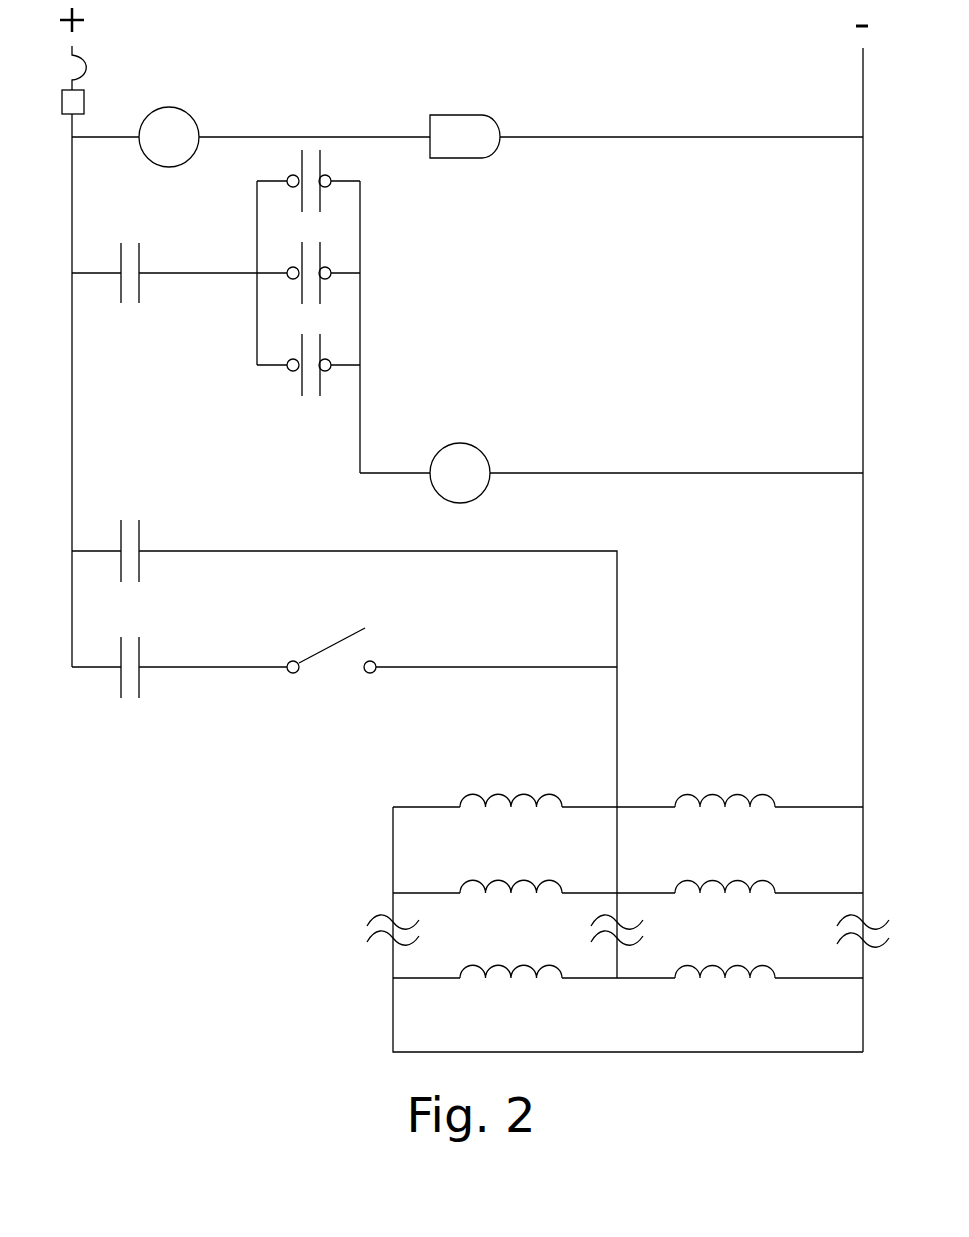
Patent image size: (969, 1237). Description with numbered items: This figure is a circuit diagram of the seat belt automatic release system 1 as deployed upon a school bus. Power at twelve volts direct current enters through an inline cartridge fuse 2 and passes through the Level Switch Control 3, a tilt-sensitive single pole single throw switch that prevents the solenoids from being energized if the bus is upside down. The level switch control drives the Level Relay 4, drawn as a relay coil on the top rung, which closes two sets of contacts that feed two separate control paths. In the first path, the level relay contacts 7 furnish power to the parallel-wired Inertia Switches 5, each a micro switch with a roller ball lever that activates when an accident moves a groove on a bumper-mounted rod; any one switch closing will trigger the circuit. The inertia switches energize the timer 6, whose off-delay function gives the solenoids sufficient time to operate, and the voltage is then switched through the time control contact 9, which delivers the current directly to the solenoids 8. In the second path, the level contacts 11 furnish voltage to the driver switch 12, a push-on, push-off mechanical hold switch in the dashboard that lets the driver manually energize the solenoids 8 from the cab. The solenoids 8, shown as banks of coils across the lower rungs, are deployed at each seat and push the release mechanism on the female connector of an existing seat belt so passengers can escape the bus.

The system 1 is at (212, 904).
The fuse 2 is at (84, 100).
The Level Switch Control 3 is at (194, 118).
The Level Relay 4 is at (496, 121).
The Inertia Switch 5 is at (320, 212).
The timer 6 is at (484, 453).
The level relay contacts 7 is at (139, 257).
The solenoids 8 is at (523, 794).
The time control contact 9 is at (139, 538).
The level contacts 11 is at (139, 655).
The driver switch 12 is at (333, 648).